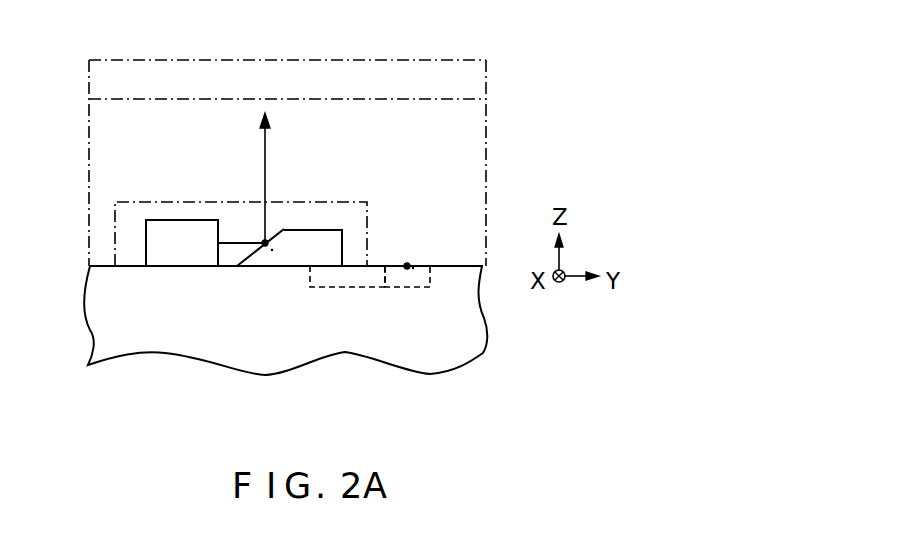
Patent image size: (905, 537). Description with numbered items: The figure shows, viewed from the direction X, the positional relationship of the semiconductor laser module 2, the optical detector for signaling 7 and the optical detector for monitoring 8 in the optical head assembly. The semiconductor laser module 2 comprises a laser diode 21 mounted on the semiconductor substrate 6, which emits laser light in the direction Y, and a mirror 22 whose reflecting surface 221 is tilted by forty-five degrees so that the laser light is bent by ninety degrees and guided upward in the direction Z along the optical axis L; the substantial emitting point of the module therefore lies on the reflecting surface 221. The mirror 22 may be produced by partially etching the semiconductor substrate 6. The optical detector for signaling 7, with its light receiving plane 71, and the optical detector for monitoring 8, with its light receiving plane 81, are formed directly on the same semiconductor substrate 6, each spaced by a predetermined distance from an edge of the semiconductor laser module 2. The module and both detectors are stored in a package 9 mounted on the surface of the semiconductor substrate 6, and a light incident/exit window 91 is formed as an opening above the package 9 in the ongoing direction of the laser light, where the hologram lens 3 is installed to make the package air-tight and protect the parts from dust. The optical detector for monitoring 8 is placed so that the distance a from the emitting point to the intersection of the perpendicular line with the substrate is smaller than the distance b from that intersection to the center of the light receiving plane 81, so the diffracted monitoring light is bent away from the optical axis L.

The semiconductor laser module 2 is at (228, 187).
The laser diode 21 is at (170, 238).
The mirror 22 is at (318, 187).
The reflecting surface 221 is at (287, 238).
The hologram lens 3 is at (332, 133).
The semiconductor substrate 6 is at (374, 342).
The optical detector for signaling 7 is at (320, 290).
The light receiving plane 71 is at (350, 266).
The optical detector for monitoring 8 is at (433, 287).
The light receiving plane 81 is at (407, 266).
The package 9 is at (486, 151).
The light incident/exit window 91 is at (312, 80).
The optical axis L is at (264, 165).
The distance from intersection to emitting point a is at (272, 248).
The distance from center of light receiving plane to intersection b is at (413, 268).